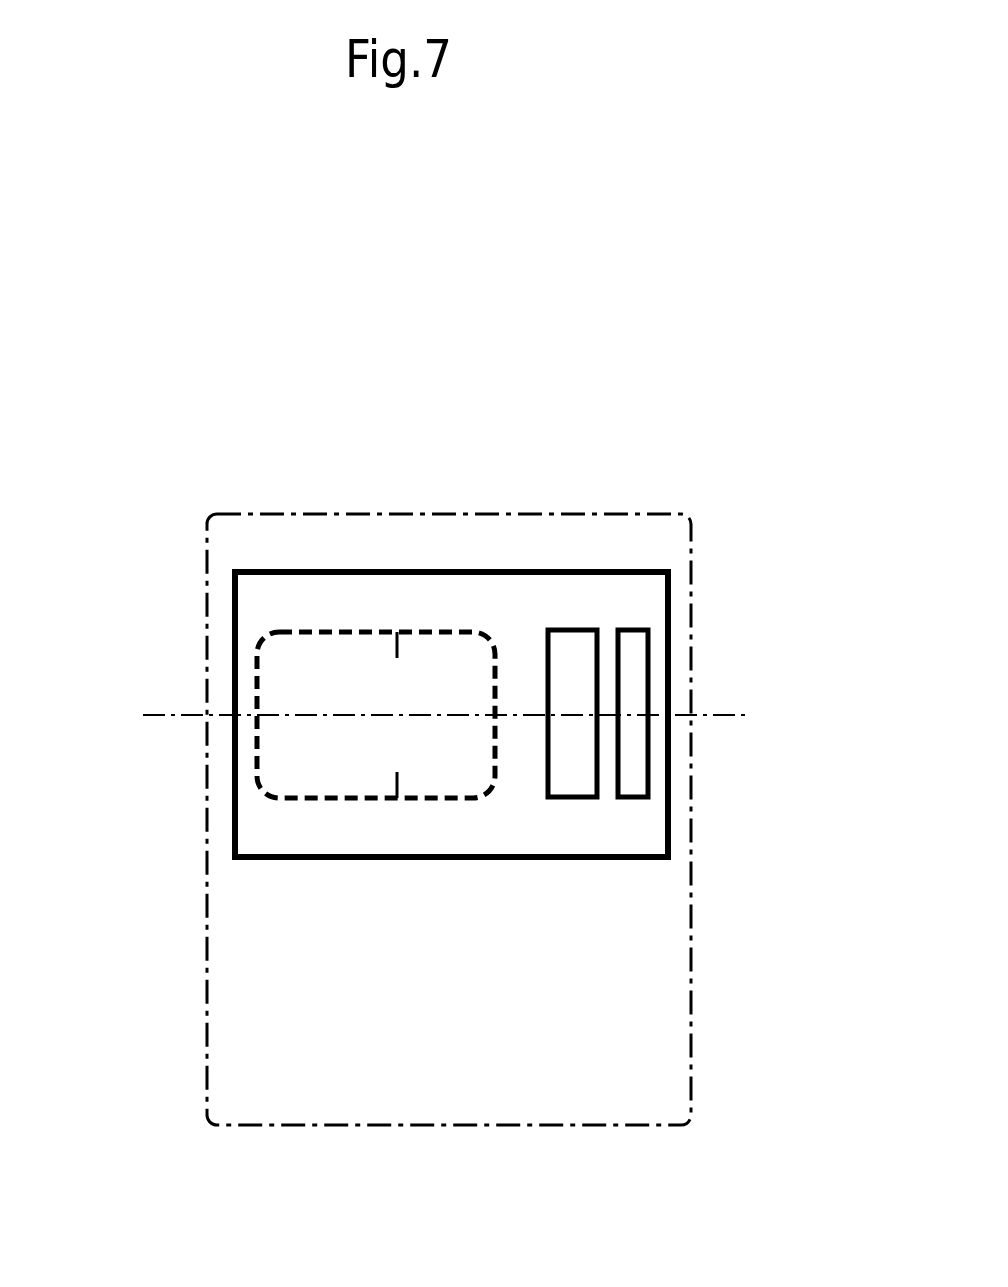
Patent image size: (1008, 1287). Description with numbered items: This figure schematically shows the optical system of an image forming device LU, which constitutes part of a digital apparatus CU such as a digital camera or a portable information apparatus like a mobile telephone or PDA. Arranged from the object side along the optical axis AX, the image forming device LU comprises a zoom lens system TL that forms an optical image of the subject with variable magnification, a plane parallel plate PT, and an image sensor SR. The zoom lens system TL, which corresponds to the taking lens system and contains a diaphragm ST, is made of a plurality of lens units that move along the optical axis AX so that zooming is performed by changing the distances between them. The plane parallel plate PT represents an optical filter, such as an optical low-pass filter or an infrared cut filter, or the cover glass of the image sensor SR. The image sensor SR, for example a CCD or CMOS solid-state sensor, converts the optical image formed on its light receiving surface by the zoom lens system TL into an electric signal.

The digital apparatus CU is at (192, 1034).
The optical axis AX is at (170, 728).
The image forming device LU is at (290, 872).
The zoom lens system TL is at (326, 612).
The diaphragm ST is at (390, 612).
The plane parallel plate PT is at (581, 610).
The image sensor SR is at (645, 610).